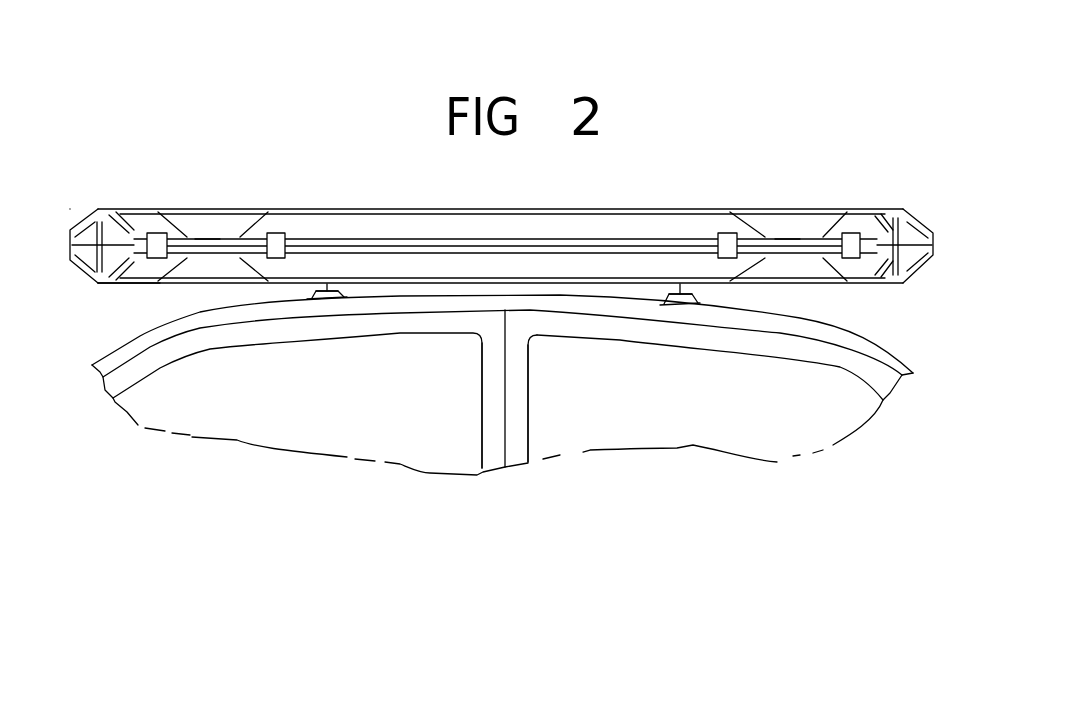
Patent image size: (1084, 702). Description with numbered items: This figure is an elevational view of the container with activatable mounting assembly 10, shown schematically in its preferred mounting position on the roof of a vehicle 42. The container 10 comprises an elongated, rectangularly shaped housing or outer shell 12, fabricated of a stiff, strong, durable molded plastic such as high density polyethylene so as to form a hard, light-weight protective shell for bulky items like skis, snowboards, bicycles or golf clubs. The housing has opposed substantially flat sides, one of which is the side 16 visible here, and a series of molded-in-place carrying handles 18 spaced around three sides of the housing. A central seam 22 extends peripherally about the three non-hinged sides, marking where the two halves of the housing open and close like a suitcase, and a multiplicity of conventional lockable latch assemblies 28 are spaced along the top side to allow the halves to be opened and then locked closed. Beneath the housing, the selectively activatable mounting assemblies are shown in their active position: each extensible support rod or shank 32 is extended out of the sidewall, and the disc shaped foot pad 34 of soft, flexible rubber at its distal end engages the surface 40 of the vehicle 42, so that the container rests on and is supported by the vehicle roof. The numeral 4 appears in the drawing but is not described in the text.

The container with activatable mounting assembly 10 is at (640, 141).
The housing or outer shell 12 is at (365, 199).
The flat side 16 is at (551, 209).
The carrying handles 18 is at (208, 240).
The central seam 22 is at (438, 246).
The lockable latch assemblies 28 is at (154, 243).
The housing base 4 is at (127, 283).
The extensible support rod or shank 32 is at (308, 297).
The foot pad 34 is at (327, 298).
The surface 40 is at (735, 309).
The vehicle 42 is at (490, 422).